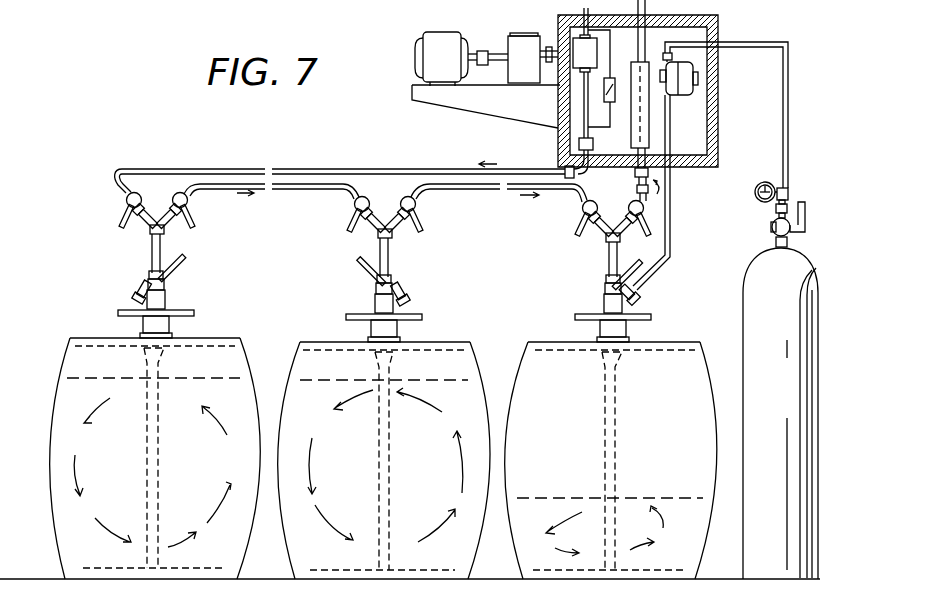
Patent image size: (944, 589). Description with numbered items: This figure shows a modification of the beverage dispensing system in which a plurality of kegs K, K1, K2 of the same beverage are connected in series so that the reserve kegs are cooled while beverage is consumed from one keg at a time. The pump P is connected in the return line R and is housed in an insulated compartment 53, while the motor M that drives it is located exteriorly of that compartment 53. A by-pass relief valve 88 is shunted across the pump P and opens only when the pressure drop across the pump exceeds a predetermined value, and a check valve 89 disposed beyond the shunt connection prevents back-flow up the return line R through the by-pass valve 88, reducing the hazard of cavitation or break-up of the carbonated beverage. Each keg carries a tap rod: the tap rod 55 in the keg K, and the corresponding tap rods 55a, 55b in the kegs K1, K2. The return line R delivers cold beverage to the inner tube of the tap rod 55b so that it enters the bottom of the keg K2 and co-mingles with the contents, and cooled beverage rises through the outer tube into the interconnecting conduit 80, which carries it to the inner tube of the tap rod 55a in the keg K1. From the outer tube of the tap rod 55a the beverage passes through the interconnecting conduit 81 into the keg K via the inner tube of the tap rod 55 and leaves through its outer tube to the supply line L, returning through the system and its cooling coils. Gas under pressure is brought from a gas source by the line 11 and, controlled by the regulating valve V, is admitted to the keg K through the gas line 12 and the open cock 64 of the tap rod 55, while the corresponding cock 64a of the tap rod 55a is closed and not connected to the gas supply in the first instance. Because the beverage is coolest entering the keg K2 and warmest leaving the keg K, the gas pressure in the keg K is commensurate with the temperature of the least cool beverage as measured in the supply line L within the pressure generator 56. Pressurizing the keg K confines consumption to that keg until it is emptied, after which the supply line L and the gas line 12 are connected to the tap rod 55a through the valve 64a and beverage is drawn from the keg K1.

The motor M is at (486, 80).
The pump P is at (582, 42).
The insulated compartment 53 is at (719, 35).
The by-pass relief valve 88 is at (612, 78).
The check valve 89 is at (579, 144).
The pressure generator 56 is at (650, 133).
The regulating valve V is at (683, 70).
The gas supply line 11 is at (788, 66).
The gas line 12 is at (670, 224).
The return line R is at (411, 152).
The interconnecting conduit 80 is at (306, 190).
The interconnecting conduit 81 is at (463, 190).
The supply line L is at (637, 189).
The tap rod 55 is at (608, 259).
The tap rod 55a is at (390, 256).
The tap rod 55b is at (161, 251).
The cock 64 is at (650, 302).
The cock 64a is at (410, 301).
The keg K is at (692, 342).
The keg K1 is at (472, 343).
The keg K2 is at (208, 338).